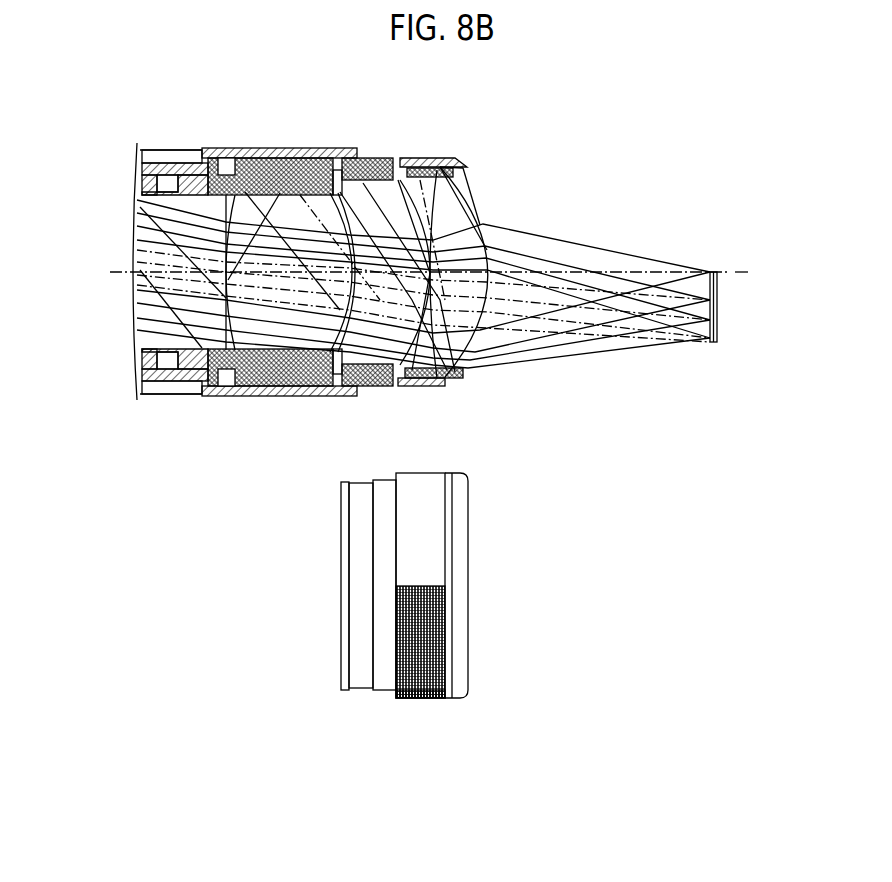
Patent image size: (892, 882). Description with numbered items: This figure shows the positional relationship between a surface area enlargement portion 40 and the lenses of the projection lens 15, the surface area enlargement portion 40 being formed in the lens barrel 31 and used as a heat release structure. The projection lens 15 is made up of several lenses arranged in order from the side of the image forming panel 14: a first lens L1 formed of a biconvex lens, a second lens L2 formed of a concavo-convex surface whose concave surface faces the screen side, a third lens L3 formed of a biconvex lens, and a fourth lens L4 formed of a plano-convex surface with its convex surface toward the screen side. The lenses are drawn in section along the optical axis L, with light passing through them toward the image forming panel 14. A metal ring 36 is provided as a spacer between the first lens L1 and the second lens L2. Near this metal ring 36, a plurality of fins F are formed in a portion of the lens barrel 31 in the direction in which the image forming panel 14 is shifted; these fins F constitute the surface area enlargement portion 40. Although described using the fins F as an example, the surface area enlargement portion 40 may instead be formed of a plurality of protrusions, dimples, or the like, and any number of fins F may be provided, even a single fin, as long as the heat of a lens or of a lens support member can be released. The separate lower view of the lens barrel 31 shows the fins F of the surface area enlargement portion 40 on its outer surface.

The projection lens 15 is at (322, 115).
The lens barrel 31 is at (392, 148).
The metal ring 36 is at (437, 169).
The surface area enlargement portion 40 is at (400, 394).
The image forming panel 14 is at (717, 302).
The optical axis L is at (740, 269).
The first lens L1 is at (470, 191).
The second lens L2 is at (358, 175).
The third lens L3 is at (277, 195).
The fourth lens L4 is at (178, 197).
The fins F is at (418, 384).